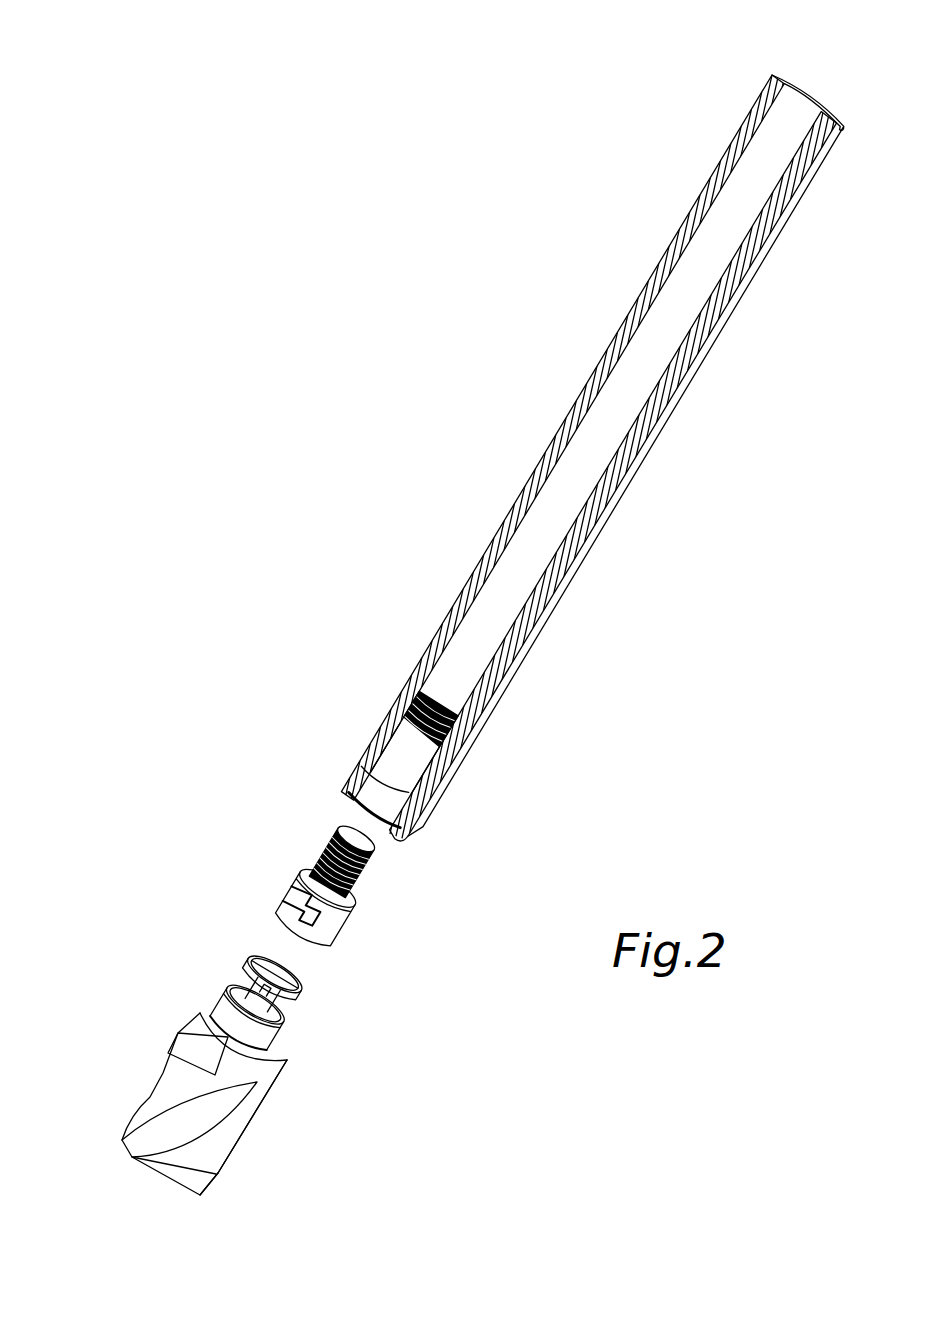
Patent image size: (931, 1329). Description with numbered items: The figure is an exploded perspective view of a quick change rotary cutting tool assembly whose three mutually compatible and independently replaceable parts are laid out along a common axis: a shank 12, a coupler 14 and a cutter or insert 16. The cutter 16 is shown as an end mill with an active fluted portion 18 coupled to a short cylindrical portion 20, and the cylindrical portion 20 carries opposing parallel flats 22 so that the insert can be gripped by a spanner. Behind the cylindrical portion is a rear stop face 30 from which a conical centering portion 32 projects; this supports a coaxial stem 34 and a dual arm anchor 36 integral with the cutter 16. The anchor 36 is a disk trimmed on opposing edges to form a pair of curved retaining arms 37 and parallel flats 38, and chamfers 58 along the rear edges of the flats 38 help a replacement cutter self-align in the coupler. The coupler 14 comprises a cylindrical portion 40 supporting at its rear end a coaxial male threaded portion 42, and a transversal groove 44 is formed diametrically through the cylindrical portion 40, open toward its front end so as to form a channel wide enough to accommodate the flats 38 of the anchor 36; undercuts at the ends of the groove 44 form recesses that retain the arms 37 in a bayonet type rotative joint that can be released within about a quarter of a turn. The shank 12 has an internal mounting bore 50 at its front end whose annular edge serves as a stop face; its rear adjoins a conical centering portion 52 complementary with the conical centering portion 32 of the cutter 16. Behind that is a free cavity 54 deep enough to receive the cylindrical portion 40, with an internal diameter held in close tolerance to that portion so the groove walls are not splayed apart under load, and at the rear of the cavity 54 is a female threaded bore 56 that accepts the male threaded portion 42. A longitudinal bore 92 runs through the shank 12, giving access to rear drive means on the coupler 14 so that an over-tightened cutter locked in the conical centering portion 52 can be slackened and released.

The shank 12 is at (540, 457).
The longitudinal bore 92 is at (800, 107).
The female threaded bore 56 is at (408, 692).
The free cavity 54 is at (390, 753).
The conical centering portion 52 is at (363, 788).
The internal mounting bore 50 is at (373, 812).
The coupler 14 is at (348, 892).
The cylindrical portion 40 is at (350, 917).
The male threaded portion 42 is at (380, 867).
The transversal groove 44 is at (293, 927).
The dual arm anchor 36 is at (271, 940).
The curved retaining arms 37 is at (258, 972).
The chamfers 58 is at (287, 975).
The parallel flats 38 is at (306, 995).
The rear stop face 30 is at (273, 975).
The coaxial stem 34 is at (247, 990).
The conical centering portion 32 is at (215, 1012).
The cutter 16 is at (222, 1101).
The parallel flats 22 is at (198, 1040).
The cylindrical portion 20 is at (270, 1073).
The active fluted portion 18 is at (222, 1180).